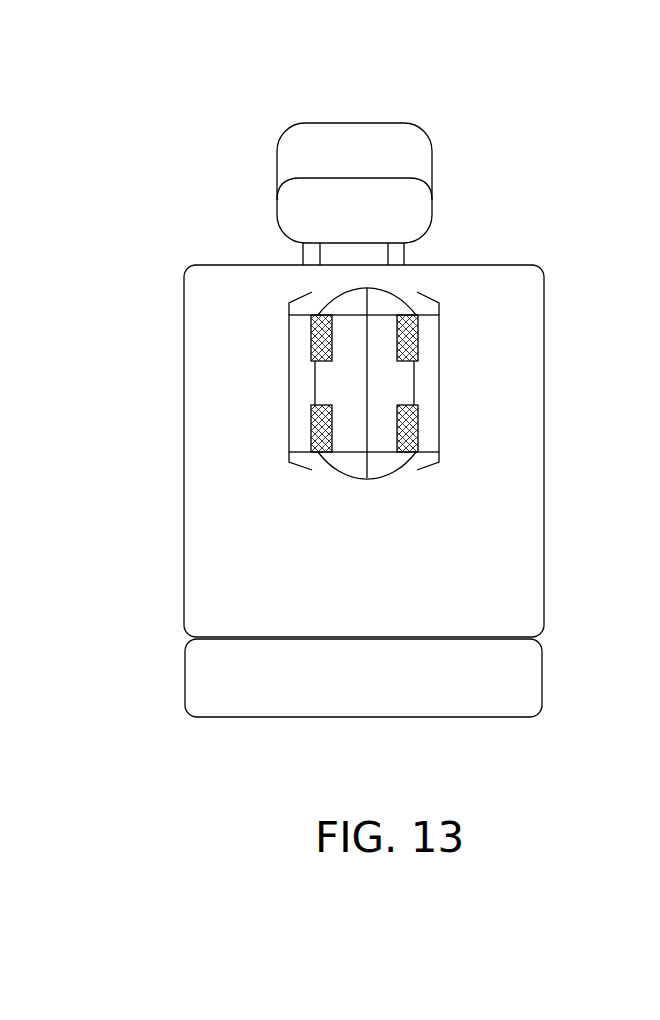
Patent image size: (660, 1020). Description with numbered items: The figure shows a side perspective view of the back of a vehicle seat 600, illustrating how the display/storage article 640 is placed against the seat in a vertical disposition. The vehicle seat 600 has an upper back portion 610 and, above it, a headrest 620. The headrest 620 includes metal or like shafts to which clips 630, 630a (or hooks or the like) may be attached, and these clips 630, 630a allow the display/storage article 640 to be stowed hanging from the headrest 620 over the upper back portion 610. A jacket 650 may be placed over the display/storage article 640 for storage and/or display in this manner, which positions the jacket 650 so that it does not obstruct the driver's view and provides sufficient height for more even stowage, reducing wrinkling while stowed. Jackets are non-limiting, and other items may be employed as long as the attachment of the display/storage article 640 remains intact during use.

The vehicle seat 600 is at (458, 79).
The upper back portion 610 is at (512, 458).
The headrest 620 is at (403, 140).
The clip 630 is at (303, 253).
The clip 630a is at (405, 252).
The display/storage article 640 is at (358, 297).
The jacket 650 is at (414, 373).